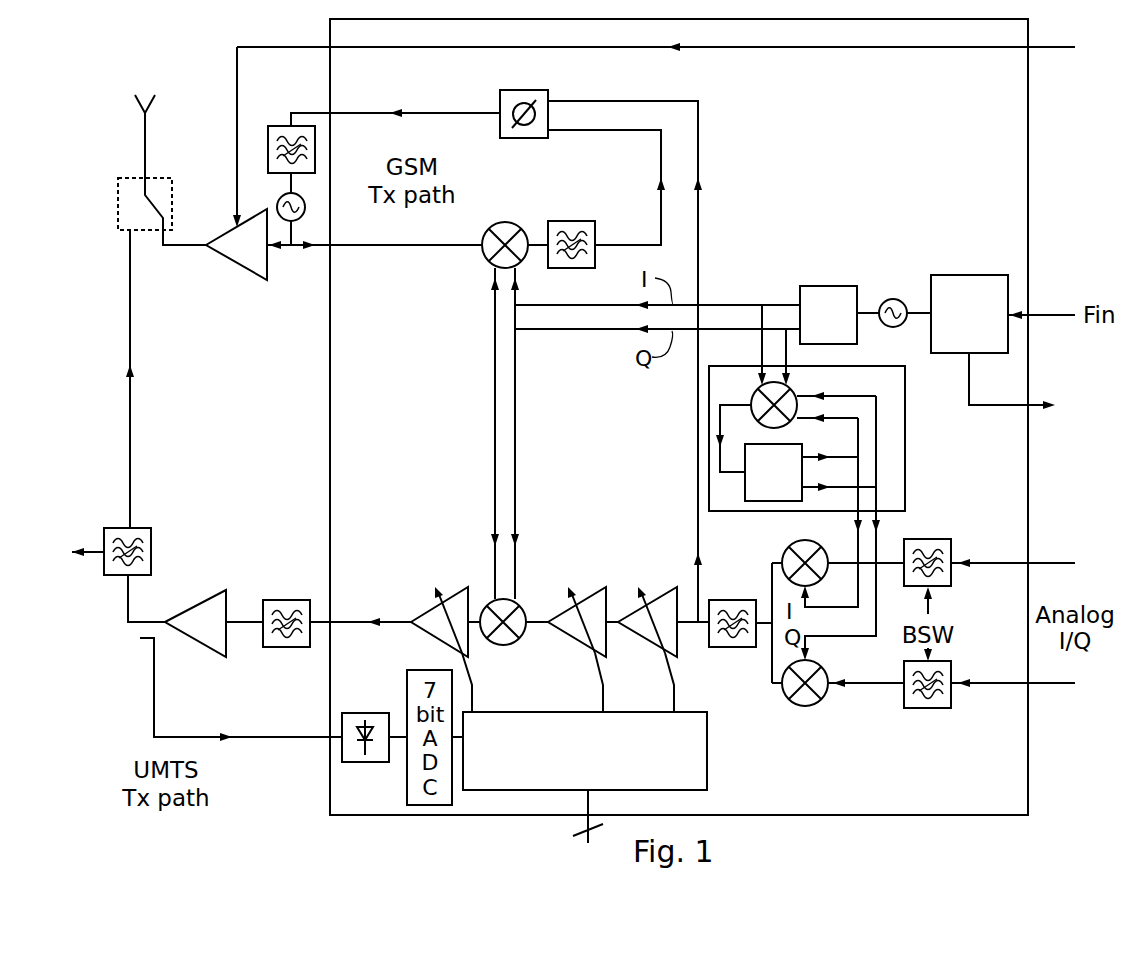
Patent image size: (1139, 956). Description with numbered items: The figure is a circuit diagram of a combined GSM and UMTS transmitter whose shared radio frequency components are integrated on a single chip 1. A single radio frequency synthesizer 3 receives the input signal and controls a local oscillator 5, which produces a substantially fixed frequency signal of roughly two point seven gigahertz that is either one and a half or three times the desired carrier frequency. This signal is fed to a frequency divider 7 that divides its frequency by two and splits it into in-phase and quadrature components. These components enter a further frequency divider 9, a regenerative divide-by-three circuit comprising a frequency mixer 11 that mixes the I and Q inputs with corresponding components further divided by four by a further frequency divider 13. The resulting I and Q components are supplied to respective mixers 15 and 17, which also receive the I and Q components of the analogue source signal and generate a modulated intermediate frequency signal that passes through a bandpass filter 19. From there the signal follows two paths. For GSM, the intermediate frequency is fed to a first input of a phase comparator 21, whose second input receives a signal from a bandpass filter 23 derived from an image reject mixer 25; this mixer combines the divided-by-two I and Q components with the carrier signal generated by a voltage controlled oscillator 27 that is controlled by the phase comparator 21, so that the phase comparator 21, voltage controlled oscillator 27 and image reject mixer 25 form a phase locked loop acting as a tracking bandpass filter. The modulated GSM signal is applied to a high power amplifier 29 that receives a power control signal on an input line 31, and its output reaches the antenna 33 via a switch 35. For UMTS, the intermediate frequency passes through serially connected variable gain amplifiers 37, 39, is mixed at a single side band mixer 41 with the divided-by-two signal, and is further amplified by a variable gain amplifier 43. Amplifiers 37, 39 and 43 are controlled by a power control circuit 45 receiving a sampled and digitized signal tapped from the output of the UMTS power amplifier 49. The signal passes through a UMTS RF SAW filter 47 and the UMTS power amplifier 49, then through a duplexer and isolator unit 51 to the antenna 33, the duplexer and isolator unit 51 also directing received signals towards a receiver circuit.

The single chip 1 is at (1028, 128).
The radio frequency synthesizer 3 is at (967, 276).
The local oscillator 5 is at (892, 298).
The frequency divider 7 is at (825, 286).
The further frequency divider 9 is at (905, 420).
The frequency mixer 11 is at (755, 393).
The further frequency divider 13 is at (745, 488).
The mixer 15 is at (787, 545).
The mixer 17 is at (806, 706).
The bandpass filter 19 is at (717, 650).
The phase comparator 21 is at (522, 90).
The bandpass filter 23 is at (578, 220).
The image reject mixer 25 is at (506, 220).
The voltage controlled oscillator 27 is at (305, 207).
The high power amplifier 29 is at (266, 280).
The input line 31 is at (237, 89).
The antenna 33 is at (150, 118).
The switch 35 is at (115, 187).
The variable gain amplifier 37 is at (678, 588).
The variable gain amplifier 39 is at (606, 591).
The single side band mixer 41 is at (503, 645).
The variable gain amplifier 43 is at (467, 591).
The power control circuit 45 is at (707, 752).
The UMTS RF SAW filter 47 is at (273, 600).
The UMTS power amplifier 49 is at (226, 592).
The duplexer and isolator unit 51 is at (152, 530).